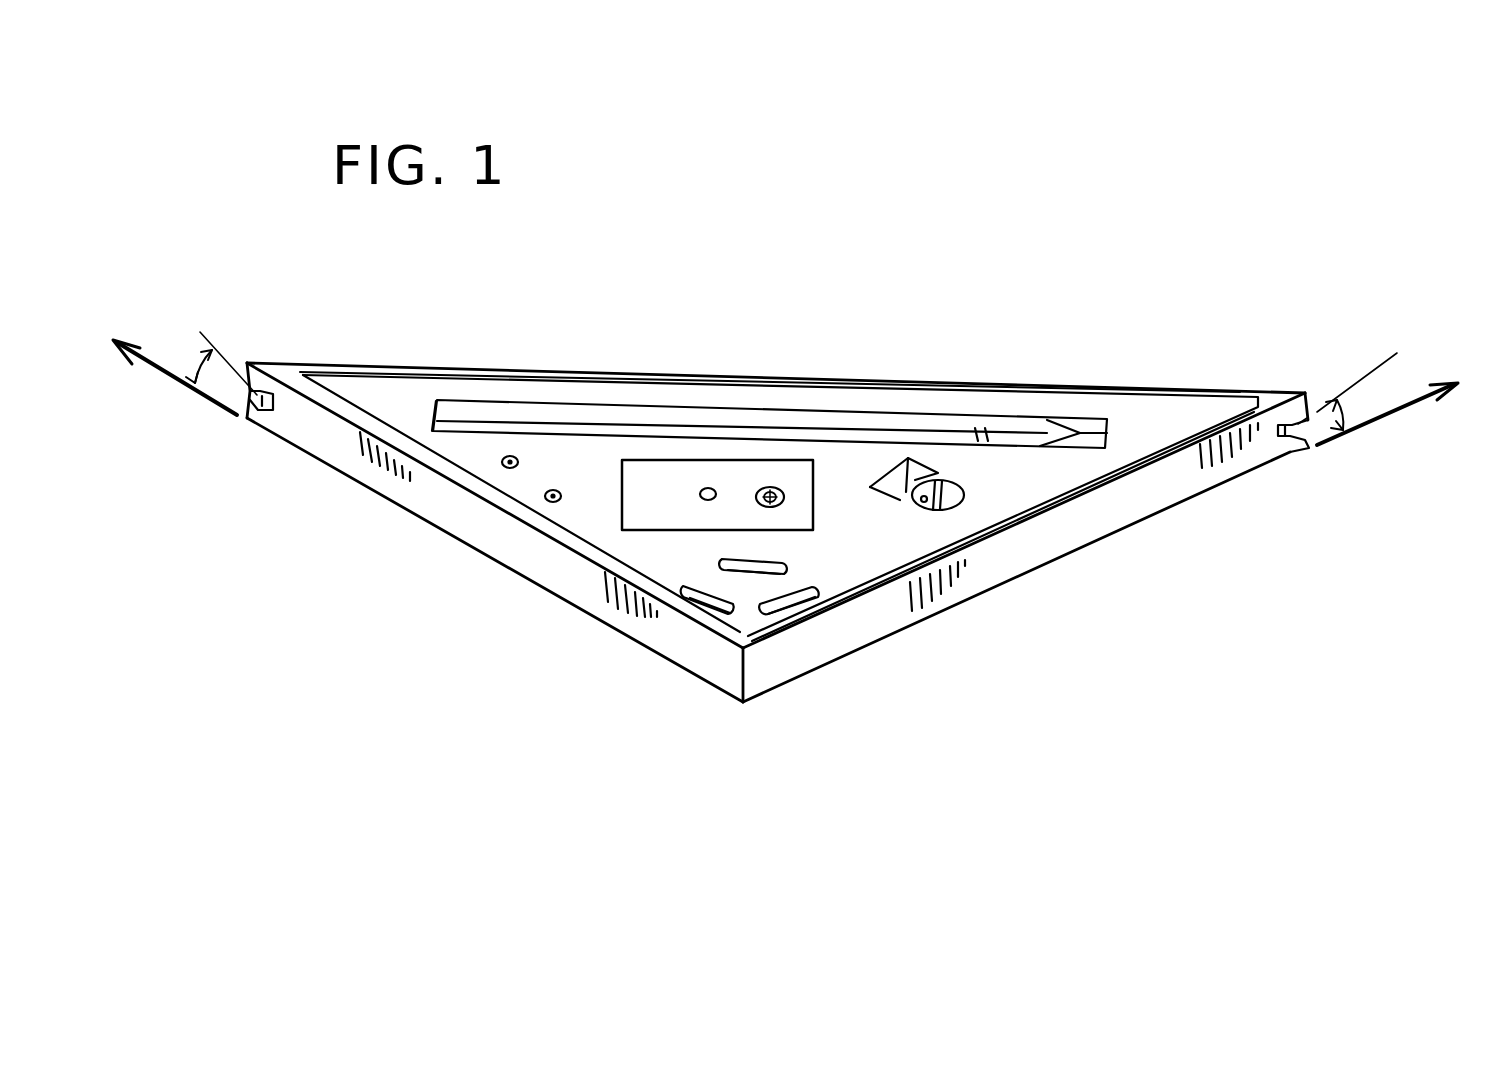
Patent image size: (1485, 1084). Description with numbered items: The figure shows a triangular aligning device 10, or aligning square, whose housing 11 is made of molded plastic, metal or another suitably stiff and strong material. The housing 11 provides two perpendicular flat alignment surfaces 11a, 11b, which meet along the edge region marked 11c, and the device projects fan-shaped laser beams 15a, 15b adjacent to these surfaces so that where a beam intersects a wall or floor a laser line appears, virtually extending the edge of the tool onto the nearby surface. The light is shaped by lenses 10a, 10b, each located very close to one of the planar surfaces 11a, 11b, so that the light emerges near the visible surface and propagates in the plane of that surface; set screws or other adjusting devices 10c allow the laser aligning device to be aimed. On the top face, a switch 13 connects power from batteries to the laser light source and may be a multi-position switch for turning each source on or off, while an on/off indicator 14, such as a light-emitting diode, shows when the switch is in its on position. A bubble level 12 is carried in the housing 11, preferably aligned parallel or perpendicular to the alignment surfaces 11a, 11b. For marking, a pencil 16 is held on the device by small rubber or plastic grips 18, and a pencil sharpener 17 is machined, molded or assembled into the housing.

The triangular aligning device 10 is at (930, 306).
The lens 10a is at (1287, 433).
The lens 10b is at (263, 398).
The adjusting devices 10c is at (546, 497).
The housing 11 is at (1193, 400).
The flat surface 11a is at (1170, 497).
The flat surface 11b is at (603, 602).
The top edge 11c is at (708, 377).
The bubble level 12 is at (805, 600).
The switch 13 is at (784, 497).
The on/off indicator 14 is at (700, 494).
The fan-shaped laser beam 15a is at (1420, 400).
The fan-shaped laser beam 15b is at (237, 415).
The pencil 16 is at (1080, 442).
The pencil sharpener 17 is at (964, 489).
The grips 18 is at (599, 434).